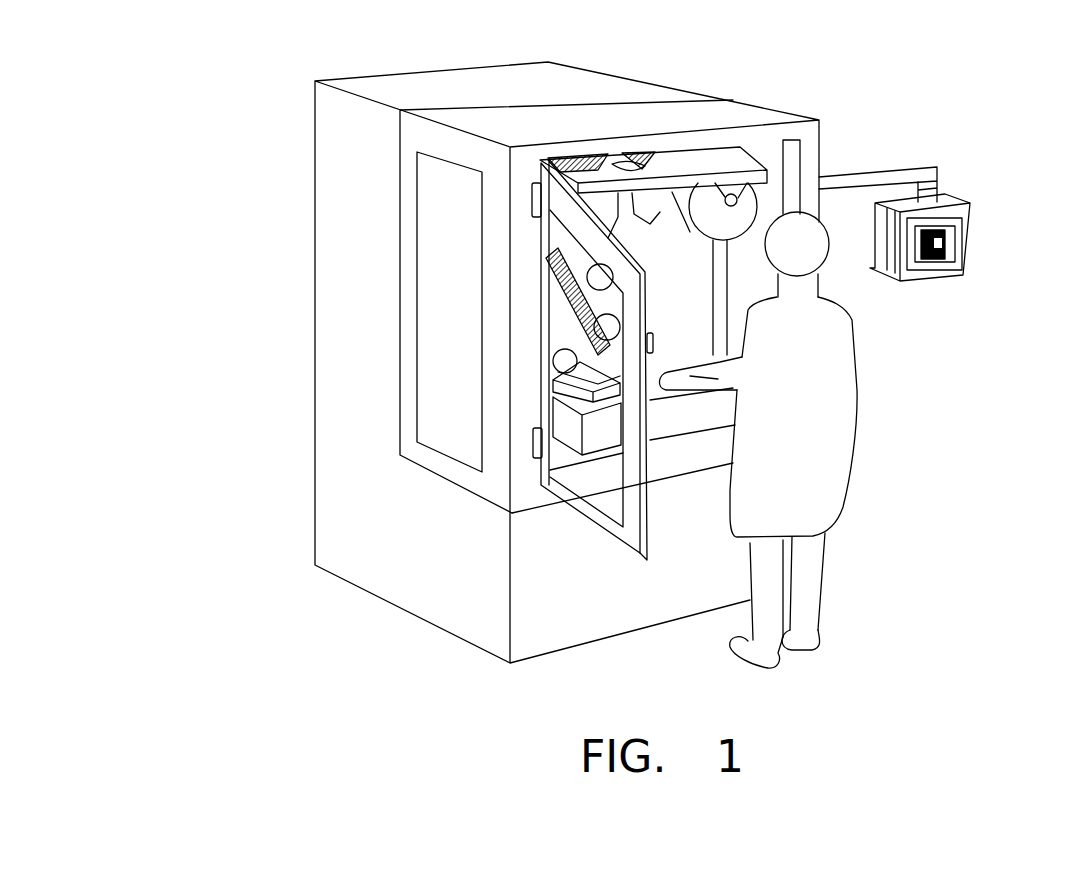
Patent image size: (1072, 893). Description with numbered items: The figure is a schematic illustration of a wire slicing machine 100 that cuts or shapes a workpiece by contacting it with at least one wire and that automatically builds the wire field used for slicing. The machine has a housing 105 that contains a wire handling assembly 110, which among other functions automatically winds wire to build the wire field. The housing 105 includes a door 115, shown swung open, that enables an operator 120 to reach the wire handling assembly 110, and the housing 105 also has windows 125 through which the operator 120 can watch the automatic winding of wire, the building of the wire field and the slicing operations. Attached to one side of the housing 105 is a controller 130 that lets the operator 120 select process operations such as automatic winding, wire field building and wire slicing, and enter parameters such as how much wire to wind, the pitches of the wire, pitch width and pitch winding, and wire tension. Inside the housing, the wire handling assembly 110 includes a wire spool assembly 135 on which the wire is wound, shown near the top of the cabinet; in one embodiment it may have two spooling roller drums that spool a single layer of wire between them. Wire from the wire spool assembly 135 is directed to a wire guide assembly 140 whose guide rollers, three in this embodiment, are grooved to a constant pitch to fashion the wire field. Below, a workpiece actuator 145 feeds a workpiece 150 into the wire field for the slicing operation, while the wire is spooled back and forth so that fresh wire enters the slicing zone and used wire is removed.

The wire slicing machine 100 is at (192, 73).
The housing 105 is at (337, 158).
The wire handling assembly 110 is at (655, 234).
The door 115 is at (635, 545).
The operator 120 is at (843, 338).
The windows 125 is at (443, 408).
The controller 130 is at (965, 248).
The wire spool assembly 135 is at (667, 160).
The wire guide assembly 140 is at (553, 350).
The workpiece actuator 145 is at (570, 427).
The workpiece 150 is at (553, 384).